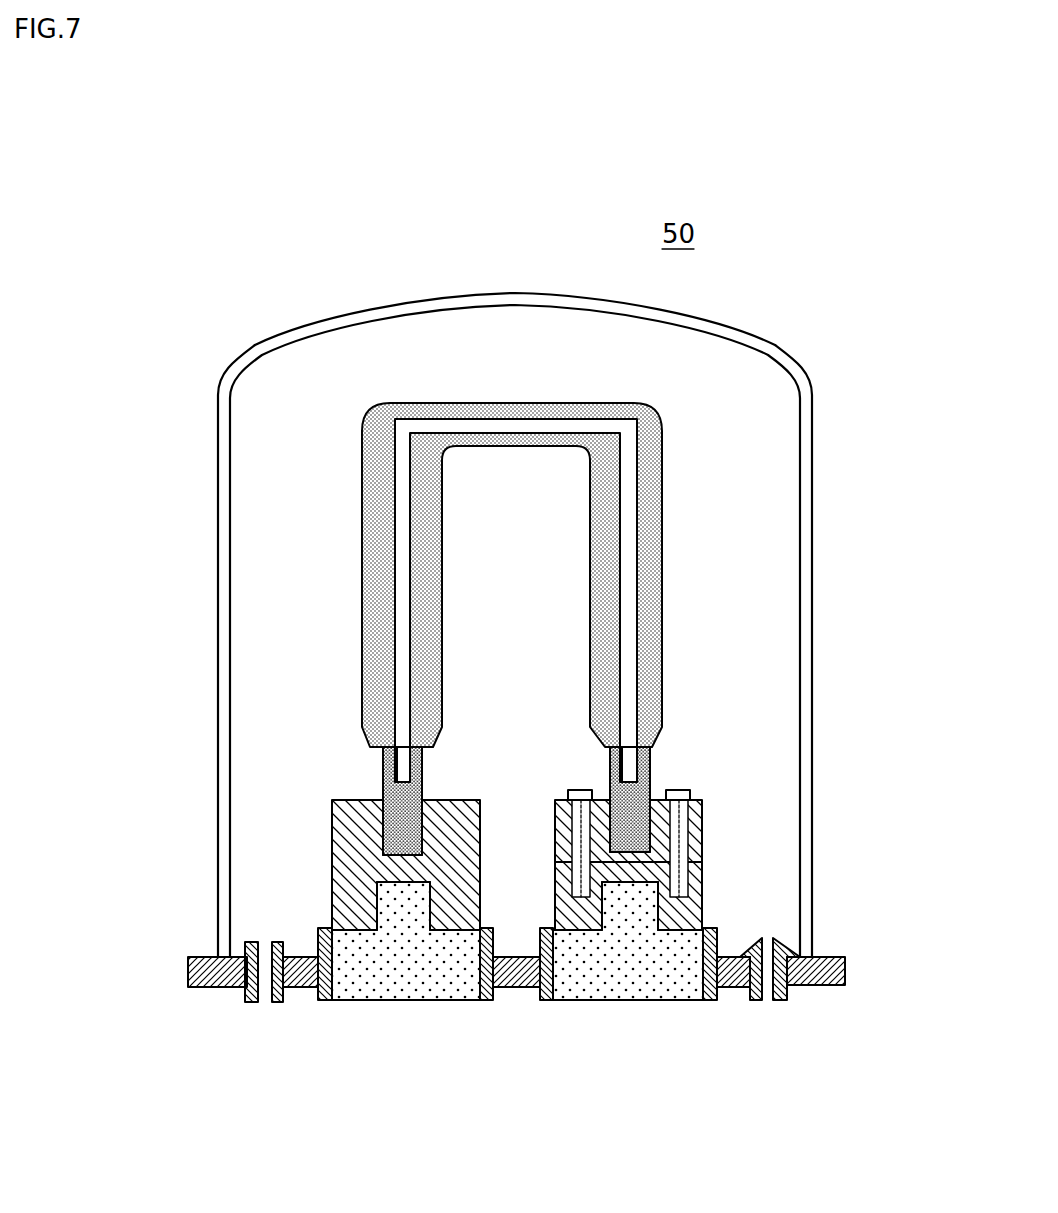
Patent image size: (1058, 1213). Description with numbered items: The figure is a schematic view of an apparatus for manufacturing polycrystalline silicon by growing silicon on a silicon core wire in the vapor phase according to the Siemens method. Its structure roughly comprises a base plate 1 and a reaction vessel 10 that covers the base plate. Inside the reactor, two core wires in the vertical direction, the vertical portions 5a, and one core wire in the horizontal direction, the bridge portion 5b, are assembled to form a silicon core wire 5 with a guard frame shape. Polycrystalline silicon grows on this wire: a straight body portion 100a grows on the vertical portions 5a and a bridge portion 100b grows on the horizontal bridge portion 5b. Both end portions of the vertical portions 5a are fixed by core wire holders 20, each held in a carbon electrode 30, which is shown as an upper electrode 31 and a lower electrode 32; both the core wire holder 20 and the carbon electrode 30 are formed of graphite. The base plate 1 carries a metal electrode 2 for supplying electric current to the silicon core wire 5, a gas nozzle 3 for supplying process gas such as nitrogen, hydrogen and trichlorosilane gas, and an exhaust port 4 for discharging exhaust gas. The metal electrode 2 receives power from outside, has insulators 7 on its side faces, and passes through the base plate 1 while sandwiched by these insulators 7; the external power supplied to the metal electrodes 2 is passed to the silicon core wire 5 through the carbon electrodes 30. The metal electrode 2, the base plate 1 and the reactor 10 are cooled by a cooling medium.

The reaction vessel 10 is at (814, 662).
The silicon core wire 5 is at (536, 561).
The portion in vertical direction 5a is at (397, 600).
The bridge portion 5b is at (549, 418).
The straight body portion 100a is at (663, 520).
The bridge portion 100b is at (465, 407).
The core wire holder 20 is at (382, 785).
The carbon electrode 30 is at (523, 844).
The upper electrode 31 is at (703, 842).
The lower electrode 32 is at (703, 897).
The metal electrode 2 is at (403, 1002).
The insulator 7 is at (323, 1002).
The base plate 1 is at (845, 960).
The exhaust port 4 is at (265, 938).
The gas nozzle 3 is at (778, 934).